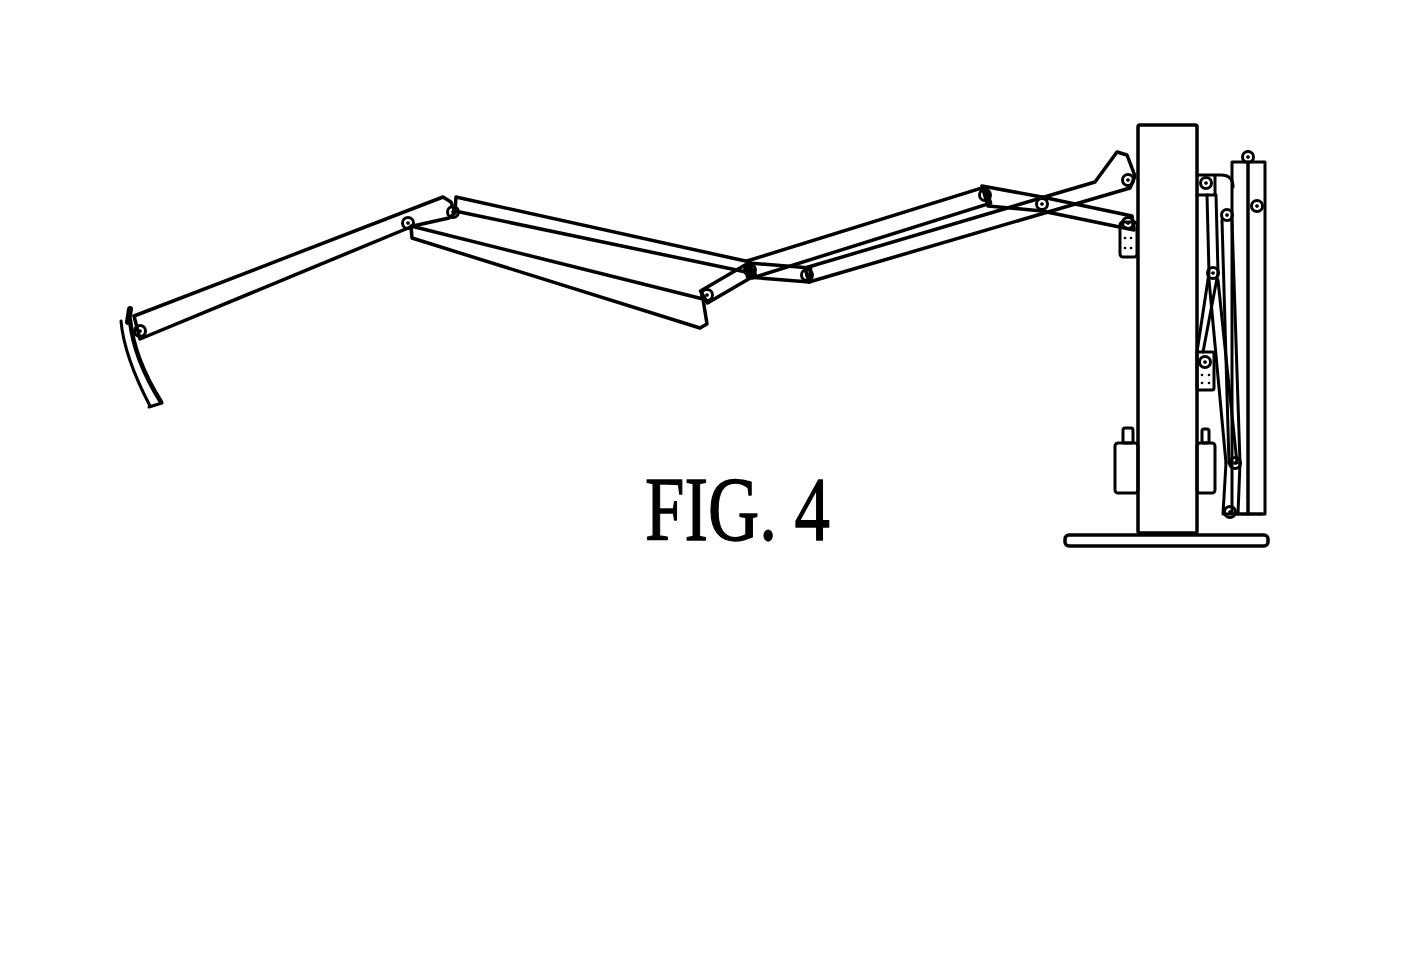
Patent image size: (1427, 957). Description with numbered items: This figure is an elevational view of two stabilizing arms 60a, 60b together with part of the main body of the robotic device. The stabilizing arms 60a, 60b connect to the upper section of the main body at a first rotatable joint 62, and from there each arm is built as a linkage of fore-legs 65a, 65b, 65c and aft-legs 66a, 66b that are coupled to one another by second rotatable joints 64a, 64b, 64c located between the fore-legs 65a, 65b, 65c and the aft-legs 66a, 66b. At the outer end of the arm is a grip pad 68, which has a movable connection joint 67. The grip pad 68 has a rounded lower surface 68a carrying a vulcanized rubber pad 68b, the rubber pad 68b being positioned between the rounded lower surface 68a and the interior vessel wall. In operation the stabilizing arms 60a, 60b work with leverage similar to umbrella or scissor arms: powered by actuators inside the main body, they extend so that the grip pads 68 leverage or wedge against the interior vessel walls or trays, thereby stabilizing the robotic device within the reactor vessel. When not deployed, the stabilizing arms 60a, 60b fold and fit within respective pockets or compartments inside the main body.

The stabilizing arm 60a is at (749, 182).
The stabilizing arm 60b is at (1305, 323).
The first rotatable joint 62 is at (1107, 142).
The second rotatable joint 64a is at (979, 166).
The second rotatable joint 64b is at (753, 300).
The second rotatable joint 64c is at (419, 252).
The fore-leg 65a is at (927, 238).
The fore-leg 65b is at (547, 225).
The fore-leg 65c is at (293, 267).
The aft-leg 66a is at (838, 245).
The aft-leg 66b is at (607, 283).
The movable connection joint 67 is at (147, 338).
The grip pad 68 is at (125, 290).
The rounded lower surface 68a is at (135, 317).
The vulcanized rubber pad 68b is at (152, 410).